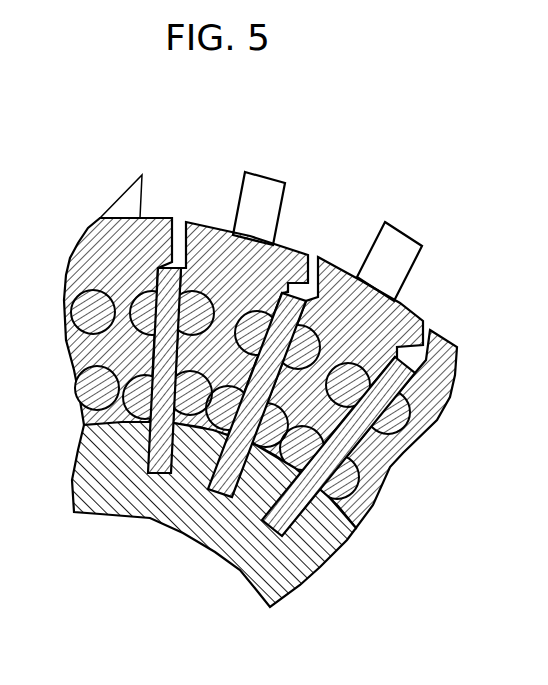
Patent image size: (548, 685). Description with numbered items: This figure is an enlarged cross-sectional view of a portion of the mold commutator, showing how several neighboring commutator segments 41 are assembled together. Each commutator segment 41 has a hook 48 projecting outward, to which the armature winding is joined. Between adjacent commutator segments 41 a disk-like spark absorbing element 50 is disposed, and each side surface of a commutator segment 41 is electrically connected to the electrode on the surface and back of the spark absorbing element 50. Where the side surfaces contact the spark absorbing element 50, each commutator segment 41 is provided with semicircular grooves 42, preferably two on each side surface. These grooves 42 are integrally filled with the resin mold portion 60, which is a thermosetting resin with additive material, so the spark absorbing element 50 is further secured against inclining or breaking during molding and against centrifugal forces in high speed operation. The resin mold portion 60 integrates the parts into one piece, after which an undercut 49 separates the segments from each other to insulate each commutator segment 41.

The commutator segment 41 is at (158, 219).
The groove 42 is at (257, 428).
The hook 48 is at (388, 255).
The undercut 49 is at (424, 334).
The spark absorbing element 50 is at (197, 227).
The resin mold portion 60 is at (187, 523).